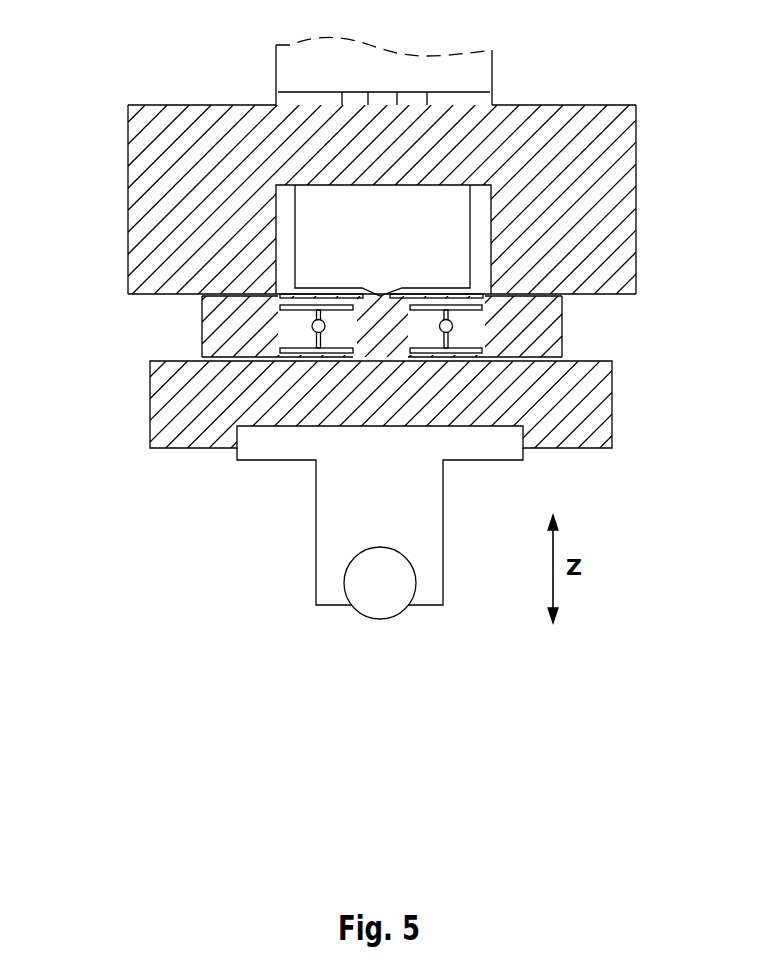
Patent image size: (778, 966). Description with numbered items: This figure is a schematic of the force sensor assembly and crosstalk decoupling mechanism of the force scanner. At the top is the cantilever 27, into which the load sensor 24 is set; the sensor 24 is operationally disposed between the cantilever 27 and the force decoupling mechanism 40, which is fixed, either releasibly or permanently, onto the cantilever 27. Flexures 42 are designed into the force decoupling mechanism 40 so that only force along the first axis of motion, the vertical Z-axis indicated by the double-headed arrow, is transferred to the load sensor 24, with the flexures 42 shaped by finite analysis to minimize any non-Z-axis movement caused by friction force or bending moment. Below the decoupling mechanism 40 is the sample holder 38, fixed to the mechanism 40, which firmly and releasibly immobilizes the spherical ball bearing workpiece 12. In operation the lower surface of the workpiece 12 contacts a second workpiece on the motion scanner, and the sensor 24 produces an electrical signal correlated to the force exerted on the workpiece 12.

The cantilever 27 is at (128, 216).
The load sensor 24 is at (368, 250).
The force decoupling mechanism 40 is at (200, 328).
The flexures 42 is at (492, 302).
The sample holder 38 is at (320, 502).
The workpiece 12 is at (404, 610).